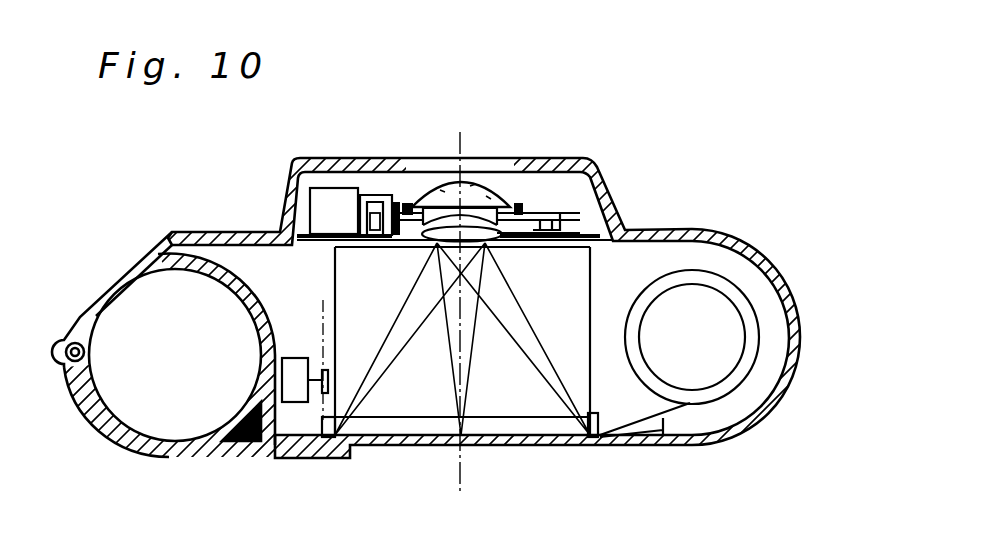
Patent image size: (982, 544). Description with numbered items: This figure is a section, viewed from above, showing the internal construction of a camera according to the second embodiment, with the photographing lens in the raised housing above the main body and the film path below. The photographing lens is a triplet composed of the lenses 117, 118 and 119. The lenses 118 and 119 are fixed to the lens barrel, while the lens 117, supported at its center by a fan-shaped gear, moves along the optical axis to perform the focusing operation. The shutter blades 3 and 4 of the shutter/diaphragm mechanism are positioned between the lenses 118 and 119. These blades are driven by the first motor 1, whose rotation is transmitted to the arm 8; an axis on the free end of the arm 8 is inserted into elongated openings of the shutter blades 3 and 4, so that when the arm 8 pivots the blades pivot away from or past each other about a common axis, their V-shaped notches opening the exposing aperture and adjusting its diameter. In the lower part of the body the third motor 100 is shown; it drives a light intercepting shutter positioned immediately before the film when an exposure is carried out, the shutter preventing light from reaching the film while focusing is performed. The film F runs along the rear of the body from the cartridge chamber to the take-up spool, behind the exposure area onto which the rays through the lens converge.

The first motor 1 is at (330, 205).
The arm 8 is at (372, 197).
The lens 117 is at (478, 186).
The shutter blade 3 is at (520, 212).
The shutter blade 4 is at (544, 213).
The lens 119 is at (490, 247).
The lens 118 is at (550, 247).
The third motor 100 is at (295, 358).
The film F is at (665, 434).